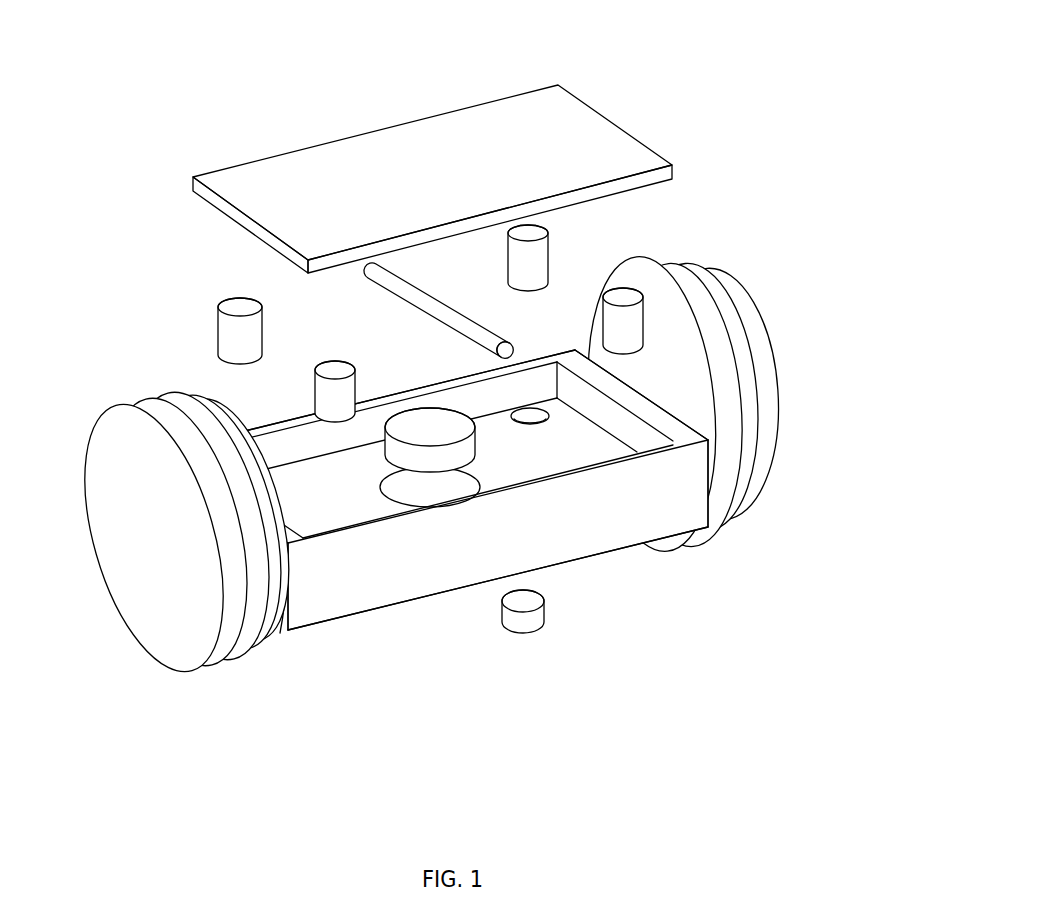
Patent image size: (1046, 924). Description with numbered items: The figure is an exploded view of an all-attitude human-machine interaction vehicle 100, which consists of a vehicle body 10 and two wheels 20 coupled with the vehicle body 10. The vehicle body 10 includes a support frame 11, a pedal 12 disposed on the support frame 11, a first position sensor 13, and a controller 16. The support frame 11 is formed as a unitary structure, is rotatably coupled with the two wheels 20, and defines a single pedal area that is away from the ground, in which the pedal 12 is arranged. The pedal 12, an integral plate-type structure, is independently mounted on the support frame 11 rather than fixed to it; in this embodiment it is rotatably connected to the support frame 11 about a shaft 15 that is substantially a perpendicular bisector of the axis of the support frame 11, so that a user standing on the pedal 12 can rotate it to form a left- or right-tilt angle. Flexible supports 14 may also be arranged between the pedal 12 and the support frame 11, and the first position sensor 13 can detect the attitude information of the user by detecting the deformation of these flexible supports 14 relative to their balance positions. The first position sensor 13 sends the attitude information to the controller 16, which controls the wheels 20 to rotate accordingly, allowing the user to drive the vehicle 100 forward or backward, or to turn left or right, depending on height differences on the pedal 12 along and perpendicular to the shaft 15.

The all-attitude human-machine interaction vehicle 100 is at (448, 373).
The vehicle body 10 is at (383, 543).
The support frame 11 is at (323, 493).
The pedal 12 is at (510, 155).
The first position sensor 13 is at (455, 425).
The flexible supports 14 is at (247, 332).
The shaft 15 is at (428, 301).
The controller 16 is at (523, 613).
The wheels 20 is at (733, 397).